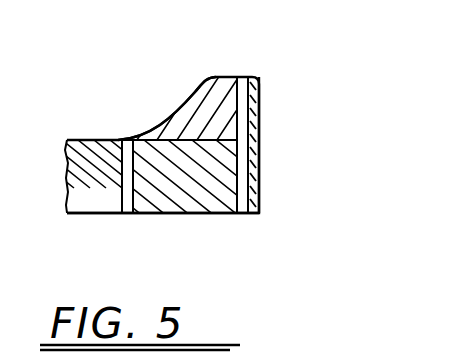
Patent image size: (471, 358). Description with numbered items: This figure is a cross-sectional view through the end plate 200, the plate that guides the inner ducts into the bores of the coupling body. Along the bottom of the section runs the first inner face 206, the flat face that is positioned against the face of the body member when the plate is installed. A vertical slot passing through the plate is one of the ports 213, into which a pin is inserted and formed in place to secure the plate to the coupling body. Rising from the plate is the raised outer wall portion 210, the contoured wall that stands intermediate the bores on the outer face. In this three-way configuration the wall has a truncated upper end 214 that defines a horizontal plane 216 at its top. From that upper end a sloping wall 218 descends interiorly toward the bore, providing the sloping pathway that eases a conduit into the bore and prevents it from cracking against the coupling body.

The end plate 200 is at (268, 170).
The first inner face 206 is at (220, 214).
The raised outer wall portion 210 is at (262, 112).
The port 213 is at (127, 202).
The truncated upper end 214 is at (232, 77).
The horizontal plane 216 is at (262, 78).
The sloping wall 218 is at (161, 125).